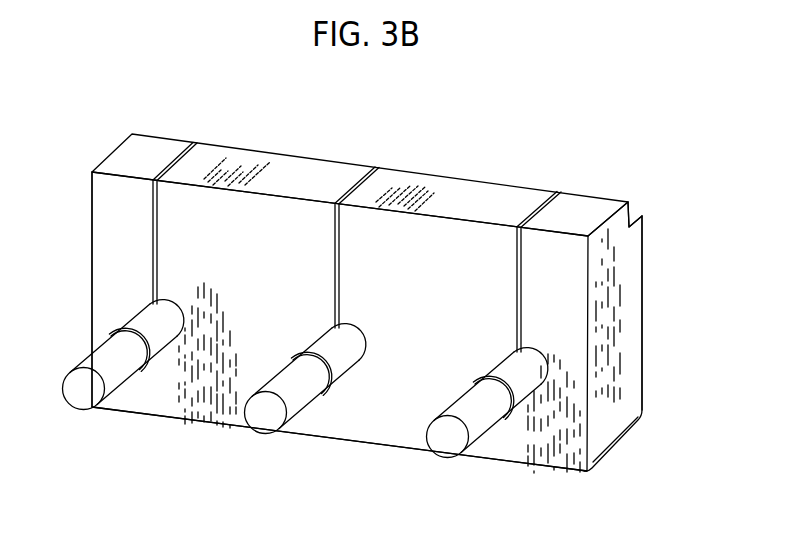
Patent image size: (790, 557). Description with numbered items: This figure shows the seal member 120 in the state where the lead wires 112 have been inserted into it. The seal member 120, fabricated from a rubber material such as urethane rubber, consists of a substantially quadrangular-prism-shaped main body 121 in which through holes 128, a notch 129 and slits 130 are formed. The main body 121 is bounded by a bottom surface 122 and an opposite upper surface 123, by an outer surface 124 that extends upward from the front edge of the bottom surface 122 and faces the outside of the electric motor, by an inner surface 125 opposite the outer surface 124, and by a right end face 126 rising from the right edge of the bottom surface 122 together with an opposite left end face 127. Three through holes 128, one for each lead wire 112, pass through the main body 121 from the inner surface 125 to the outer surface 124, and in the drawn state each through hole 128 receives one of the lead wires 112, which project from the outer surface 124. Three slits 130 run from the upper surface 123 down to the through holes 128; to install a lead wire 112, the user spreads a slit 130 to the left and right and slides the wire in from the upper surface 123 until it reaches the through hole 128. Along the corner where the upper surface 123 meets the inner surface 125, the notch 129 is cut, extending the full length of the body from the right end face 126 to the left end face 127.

The lead wire 112 is at (315, 400).
The seal member 120 is at (376, 308).
The main body 121 is at (441, 165).
The bottom surface 122 is at (373, 444).
The upper surface 123 is at (246, 167).
The outer surface 124 is at (103, 227).
The inner surface 125 is at (642, 370).
The right end face 126 is at (630, 318).
The left end face 127 is at (90, 277).
The through hole 128 is at (168, 320).
The notch 129 is at (633, 212).
The slit 130 is at (152, 205).